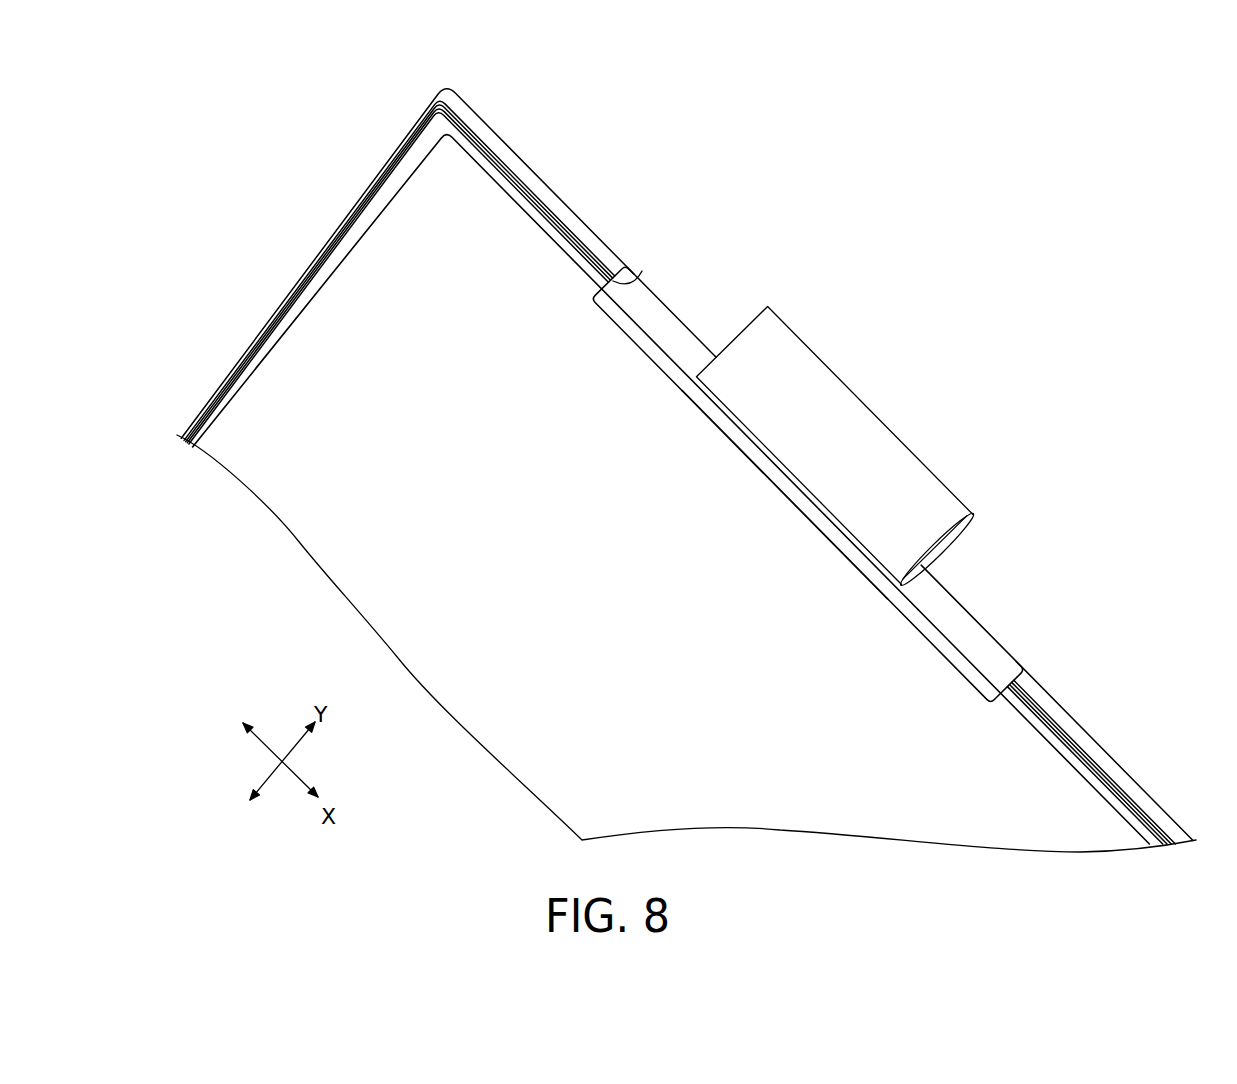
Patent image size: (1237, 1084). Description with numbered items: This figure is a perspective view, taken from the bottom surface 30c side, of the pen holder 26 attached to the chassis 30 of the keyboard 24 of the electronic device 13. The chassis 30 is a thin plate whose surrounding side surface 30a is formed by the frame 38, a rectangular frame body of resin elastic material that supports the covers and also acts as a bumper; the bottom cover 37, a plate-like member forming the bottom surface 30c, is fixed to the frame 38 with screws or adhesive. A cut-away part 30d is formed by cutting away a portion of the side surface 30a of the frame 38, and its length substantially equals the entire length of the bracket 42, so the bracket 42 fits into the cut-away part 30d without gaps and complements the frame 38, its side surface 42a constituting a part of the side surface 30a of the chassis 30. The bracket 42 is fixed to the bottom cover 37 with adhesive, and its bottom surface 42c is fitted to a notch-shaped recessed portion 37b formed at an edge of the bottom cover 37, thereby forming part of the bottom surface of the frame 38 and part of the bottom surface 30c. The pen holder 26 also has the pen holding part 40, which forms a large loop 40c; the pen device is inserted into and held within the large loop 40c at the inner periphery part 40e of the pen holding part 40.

The electronic device 13 is at (350, 90).
The keyboard 24 is at (705, 465).
The chassis 30 is at (1120, 745).
The side surface 30a is at (679, 467).
The frame 38 is at (524, 162).
The bottom surface 30c is at (665, 446).
The bottom cover 37 is at (1010, 752).
The recessed portion 37b is at (914, 621).
The cut-away part 30d is at (641, 271).
The pen holder 26 is at (860, 344).
The pen holding part 40 is at (874, 460).
The large loop 40c is at (1019, 549).
The inner periphery part 40e is at (950, 548).
The bracket 42 is at (871, 535).
The side surface 42a is at (958, 620).
The bottom surface 42c is at (652, 343).